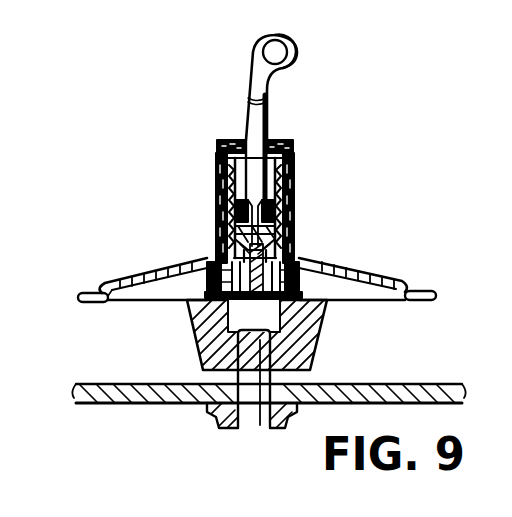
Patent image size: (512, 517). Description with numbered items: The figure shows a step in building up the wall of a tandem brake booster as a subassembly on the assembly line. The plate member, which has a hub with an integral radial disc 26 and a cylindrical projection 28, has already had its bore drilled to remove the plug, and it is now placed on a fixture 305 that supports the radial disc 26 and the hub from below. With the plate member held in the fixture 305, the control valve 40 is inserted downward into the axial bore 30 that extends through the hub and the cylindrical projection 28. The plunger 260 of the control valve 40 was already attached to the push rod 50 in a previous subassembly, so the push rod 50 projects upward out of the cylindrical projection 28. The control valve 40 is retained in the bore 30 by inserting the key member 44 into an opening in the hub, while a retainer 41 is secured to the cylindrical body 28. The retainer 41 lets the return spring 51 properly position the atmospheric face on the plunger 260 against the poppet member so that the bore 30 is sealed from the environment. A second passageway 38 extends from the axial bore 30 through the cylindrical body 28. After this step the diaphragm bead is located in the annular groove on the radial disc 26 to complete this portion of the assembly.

The push rod 50 is at (266, 121).
The control valve 40 is at (215, 160).
The retainer 41 is at (292, 163).
The cylindrical projection 28 is at (295, 193).
The return spring 51 is at (217, 207).
The axial bore 30 is at (217, 229).
The plunger 260 is at (296, 248).
The second passageway 38 is at (300, 260).
The key member 44 is at (312, 264).
The radial disc 26 is at (412, 281).
The fixture 305 is at (326, 322).